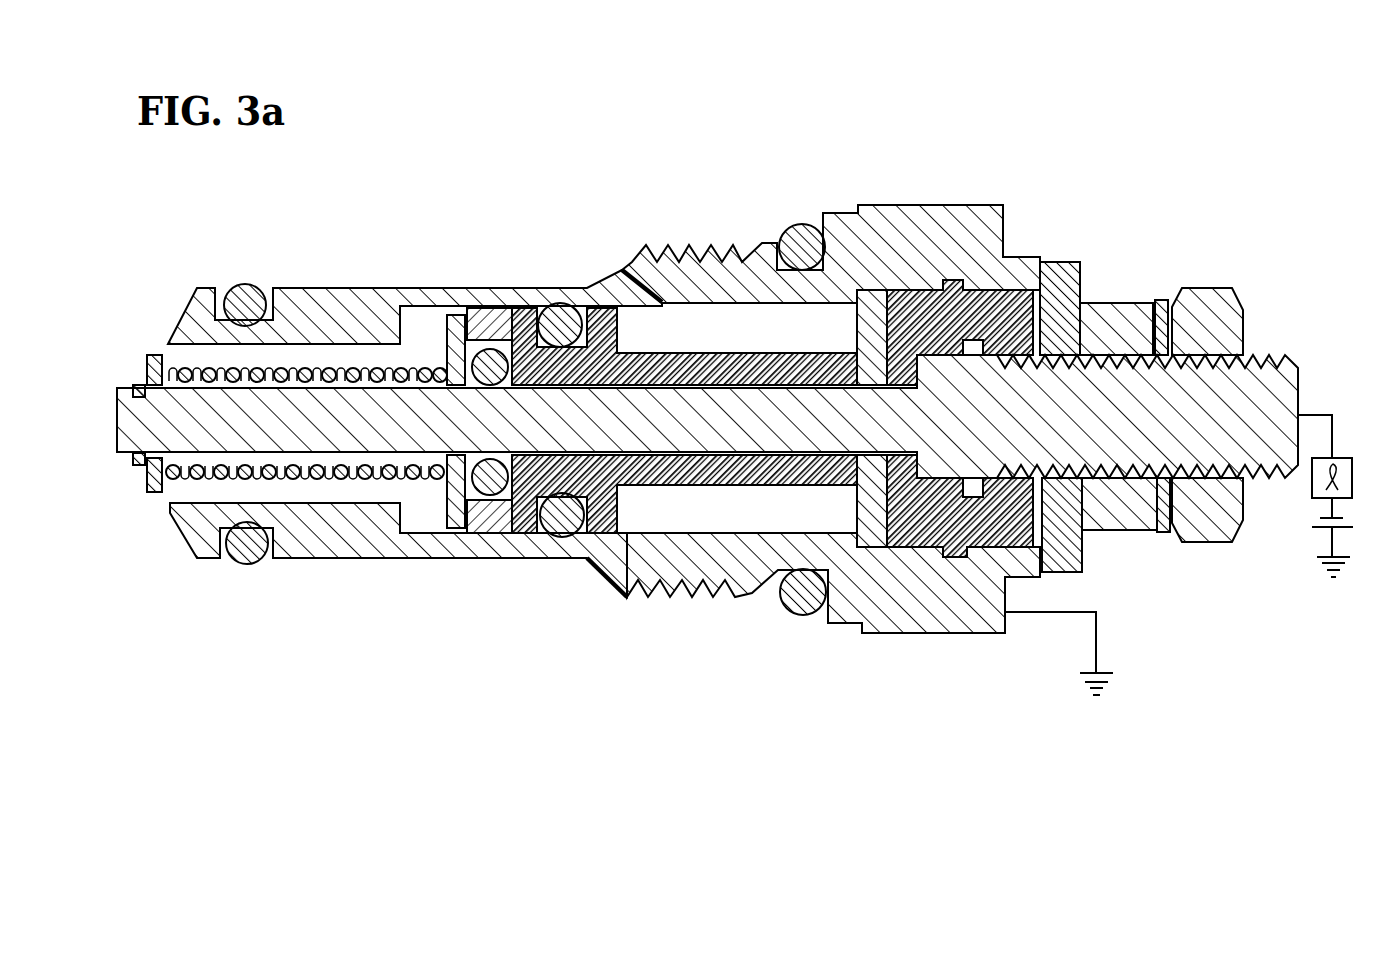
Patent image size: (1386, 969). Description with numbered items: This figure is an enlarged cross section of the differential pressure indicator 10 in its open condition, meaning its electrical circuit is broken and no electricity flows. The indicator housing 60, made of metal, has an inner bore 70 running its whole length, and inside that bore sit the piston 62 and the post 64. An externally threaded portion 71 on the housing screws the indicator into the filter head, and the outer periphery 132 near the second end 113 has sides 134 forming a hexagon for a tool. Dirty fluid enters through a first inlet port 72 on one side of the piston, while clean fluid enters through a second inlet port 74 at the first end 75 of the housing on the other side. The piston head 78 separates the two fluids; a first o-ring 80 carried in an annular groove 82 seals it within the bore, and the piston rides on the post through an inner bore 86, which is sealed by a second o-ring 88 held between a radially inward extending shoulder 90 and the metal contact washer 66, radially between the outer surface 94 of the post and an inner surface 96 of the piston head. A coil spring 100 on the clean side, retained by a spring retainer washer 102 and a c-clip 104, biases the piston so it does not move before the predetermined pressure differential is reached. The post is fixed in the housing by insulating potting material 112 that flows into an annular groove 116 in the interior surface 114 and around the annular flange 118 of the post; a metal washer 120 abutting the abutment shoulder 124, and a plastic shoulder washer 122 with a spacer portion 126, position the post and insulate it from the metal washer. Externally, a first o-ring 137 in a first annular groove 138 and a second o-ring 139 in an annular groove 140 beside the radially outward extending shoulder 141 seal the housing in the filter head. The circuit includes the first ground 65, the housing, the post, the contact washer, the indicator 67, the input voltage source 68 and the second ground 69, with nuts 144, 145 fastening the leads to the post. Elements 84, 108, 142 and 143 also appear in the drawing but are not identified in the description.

The differential pressure indicator 10 is at (1202, 703).
The indicator housing 60 is at (608, 563).
The piston 62 is at (657, 482).
The post 64 is at (683, 417).
The first ground 65 is at (1110, 672).
The metal contact washer 66 is at (437, 523).
The visual or audio indicator 67 is at (1332, 458).
The input voltage source 68 is at (1320, 527).
The second ground 69 is at (1330, 575).
The inner bore 70 is at (707, 592).
The externally threaded portion 71 is at (697, 285).
The first inlet port 72 is at (627, 280).
The second inlet port 74 is at (145, 348).
The first end 75 is at (167, 342).
The piston head 78 is at (605, 318).
The first o-ring 80 is at (558, 320).
The annular groove 82 is at (537, 308).
The bore 84 is at (418, 310).
The inner bore 86 is at (718, 378).
The second o-ring 88 is at (490, 492).
The radially inward extending shoulder 90 is at (500, 527).
The outer surface 94 is at (393, 490).
The inner surface 96 is at (462, 525).
The coil spring 100 is at (320, 480).
The spring retainer washer 102 is at (153, 493).
The c-clip 104 is at (132, 462).
The shoulder 108 is at (393, 335).
The potting material 112 is at (1022, 282).
The second end 113 is at (1033, 295).
The interior surface 114 is at (1080, 295).
The annular groove 116 is at (937, 277).
The annular flange 118 is at (1023, 292).
The metal washer 120 is at (888, 500).
The plastic shoulder washer 122 is at (905, 500).
The abutment shoulder 124 is at (858, 500).
The spacer portion 126 is at (850, 487).
The outer periphery 132 is at (885, 205).
The sides 134 is at (983, 205).
The first o-ring 137 is at (242, 563).
The first annular groove 138 is at (270, 560).
The second o-ring 139 is at (822, 615).
The annular groove 140 is at (822, 620).
The radially outward extending shoulder 141 is at (822, 632).
The insulator block 142 is at (1082, 545).
The nut 143 is at (1243, 333).
The nut 144 is at (1160, 292).
The nut 145 is at (1163, 533).